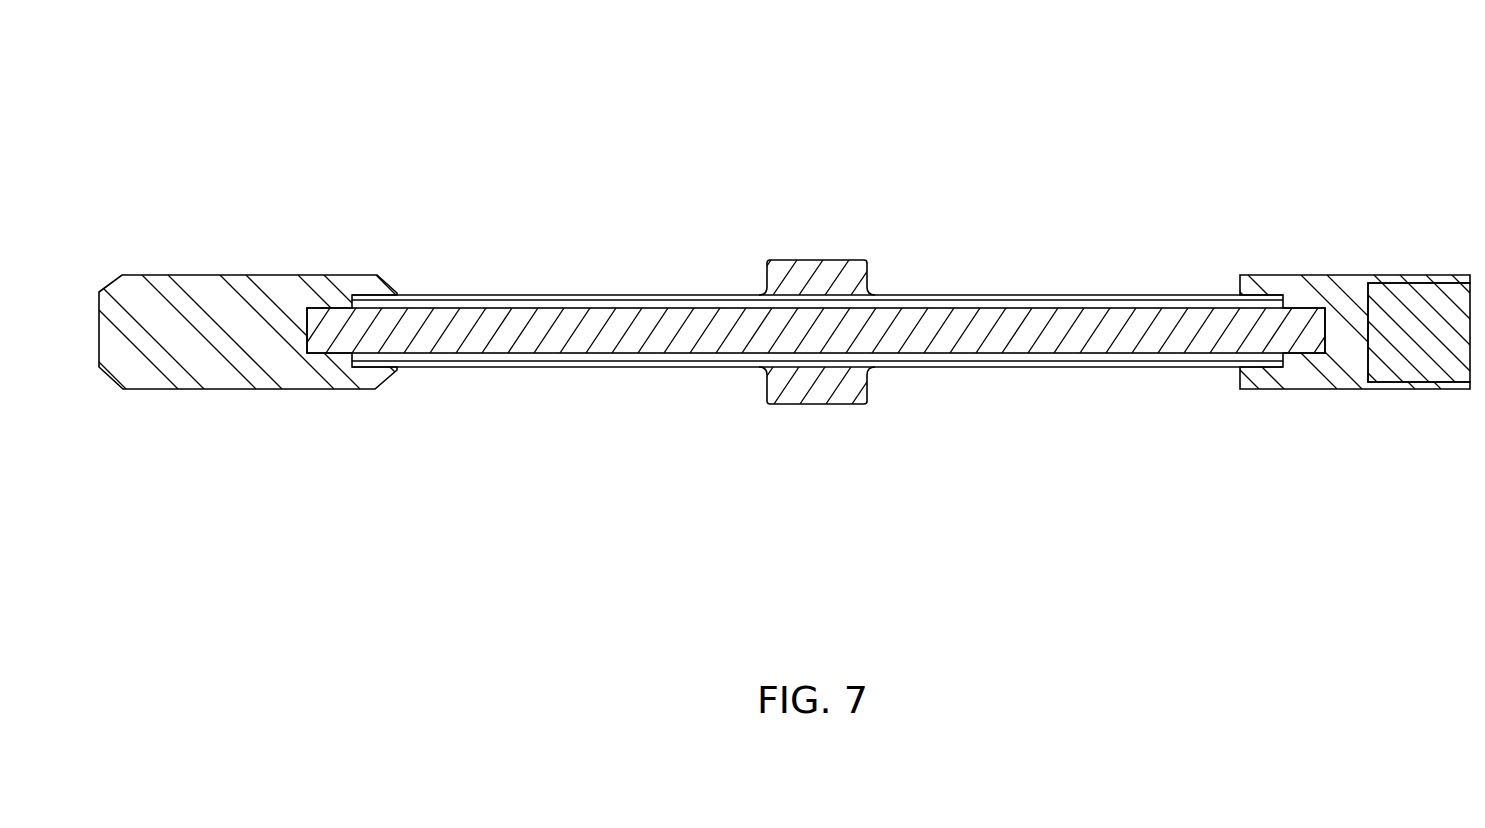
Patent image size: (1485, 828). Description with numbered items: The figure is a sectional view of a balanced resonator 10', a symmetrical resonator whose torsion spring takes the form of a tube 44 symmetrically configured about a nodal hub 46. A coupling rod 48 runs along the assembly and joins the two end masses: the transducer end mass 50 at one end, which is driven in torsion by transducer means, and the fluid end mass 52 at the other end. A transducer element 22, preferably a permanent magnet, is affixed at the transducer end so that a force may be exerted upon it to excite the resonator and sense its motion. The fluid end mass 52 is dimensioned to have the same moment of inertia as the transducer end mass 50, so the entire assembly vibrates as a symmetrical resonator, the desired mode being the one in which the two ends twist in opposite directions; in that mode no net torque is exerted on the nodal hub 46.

The balanced resonator 10' is at (748, 257).
The fluid end mass 52 is at (216, 275).
The transducer end mass 50 is at (1353, 275).
The transducer element 22 is at (1447, 383).
The coupling rod 48 is at (1095, 347).
The tube 44 is at (953, 294).
The nodal hub 46 is at (853, 403).